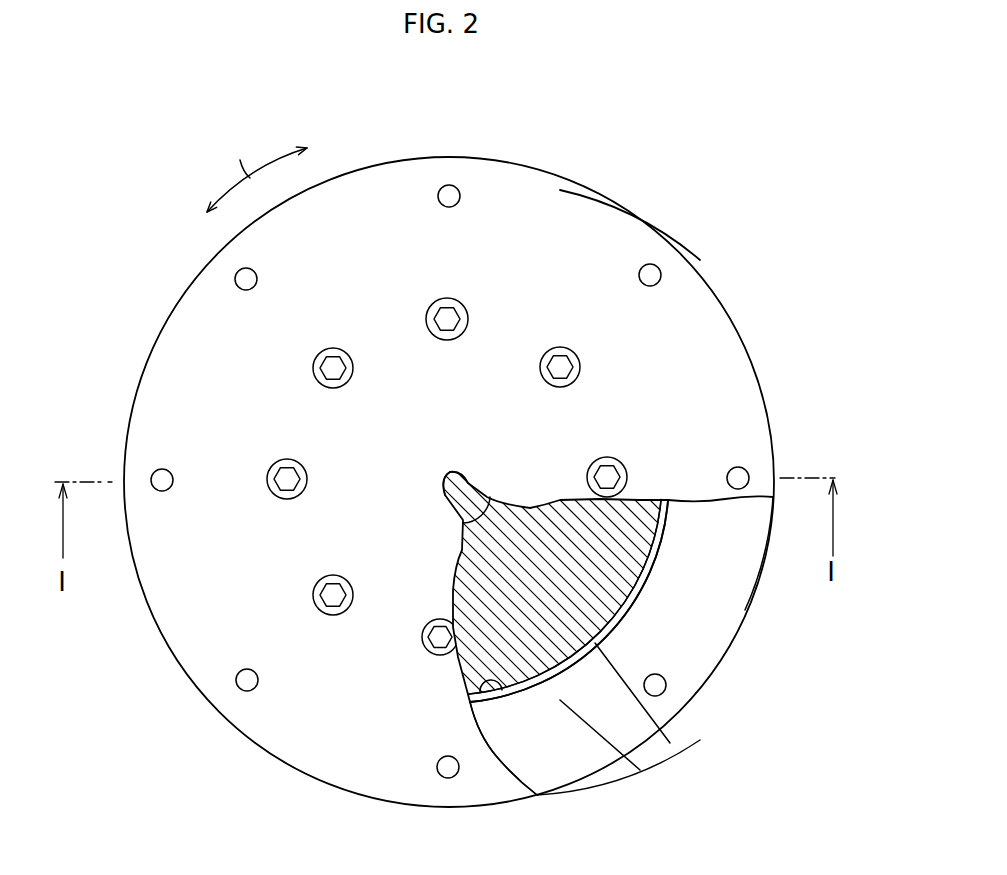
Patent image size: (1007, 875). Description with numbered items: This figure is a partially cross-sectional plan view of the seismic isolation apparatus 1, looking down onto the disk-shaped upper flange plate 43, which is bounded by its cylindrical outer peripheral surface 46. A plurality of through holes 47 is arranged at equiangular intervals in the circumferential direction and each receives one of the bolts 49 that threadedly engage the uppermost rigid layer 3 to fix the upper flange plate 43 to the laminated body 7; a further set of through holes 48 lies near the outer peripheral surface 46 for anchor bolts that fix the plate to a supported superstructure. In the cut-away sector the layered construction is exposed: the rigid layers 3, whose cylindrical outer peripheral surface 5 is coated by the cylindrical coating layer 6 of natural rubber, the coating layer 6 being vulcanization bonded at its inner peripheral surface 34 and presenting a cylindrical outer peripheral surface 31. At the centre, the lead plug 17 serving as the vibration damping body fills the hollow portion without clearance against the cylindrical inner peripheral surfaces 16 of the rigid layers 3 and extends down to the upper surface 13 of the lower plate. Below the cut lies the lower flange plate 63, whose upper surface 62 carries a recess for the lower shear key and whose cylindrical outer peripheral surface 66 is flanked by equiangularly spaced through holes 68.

The seismic isolation apparatus 1 is at (180, 277).
The rigid layers 3 is at (628, 595).
The outer peripheral surface of rigid layers 5 is at (563, 578).
The coating layer 6 is at (642, 705).
The laminated body 7 is at (525, 697).
The upper surface of lower plate 13 is at (590, 758).
The inner peripheral surfaces of rigid layers 16 is at (482, 492).
The lead plug 17 is at (457, 483).
The outer peripheral surface of coating layer 31 is at (627, 622).
The inner peripheral surface of coating layer 34 is at (485, 686).
The upper flange plate 43 is at (157, 387).
The outer peripheral surface of upper flange plate 46 is at (638, 213).
The through holes 47 is at (356, 394).
The through holes 48 is at (449, 193).
The bolts 49 is at (485, 229).
The upper surface of lower flange plate 62 is at (754, 518).
The lower flange plate 63 is at (747, 558).
The outer peripheral surface of lower flange plate 66 is at (637, 750).
The through holes 68 is at (657, 687).